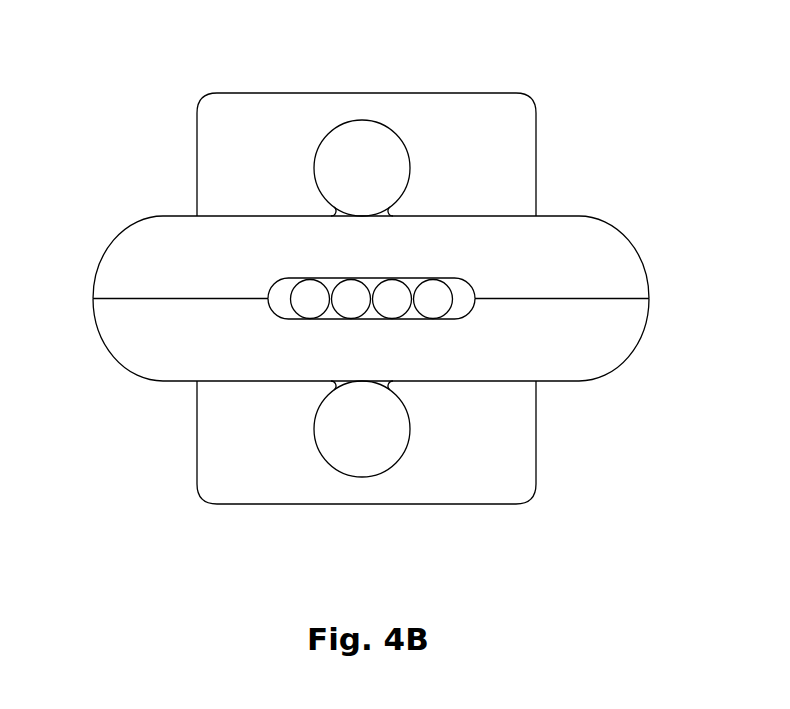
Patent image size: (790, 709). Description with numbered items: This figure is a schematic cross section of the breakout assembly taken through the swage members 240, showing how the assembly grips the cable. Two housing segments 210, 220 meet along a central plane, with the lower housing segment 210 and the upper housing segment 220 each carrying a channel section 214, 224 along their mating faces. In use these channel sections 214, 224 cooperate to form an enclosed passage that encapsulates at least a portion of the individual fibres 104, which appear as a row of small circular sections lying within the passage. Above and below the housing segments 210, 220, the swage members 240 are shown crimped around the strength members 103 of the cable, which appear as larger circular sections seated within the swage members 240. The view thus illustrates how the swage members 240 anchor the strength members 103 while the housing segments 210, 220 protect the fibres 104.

The strength member 103 is at (370, 165).
The individual fibre 104 is at (432, 299).
The housing segment 210 is at (148, 353).
The channel section 214 is at (412, 320).
The housing segment 220 is at (595, 248).
The channel section 224 is at (295, 280).
The swage member 240 is at (522, 156).